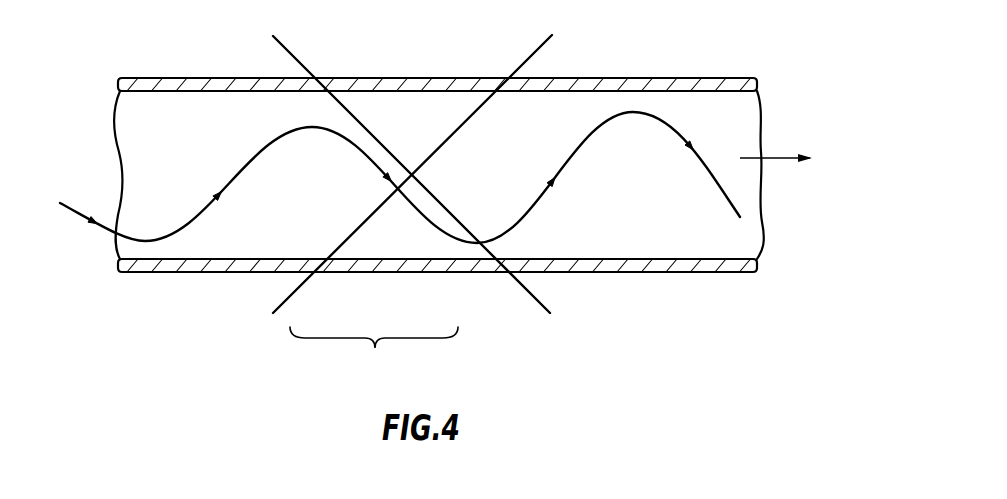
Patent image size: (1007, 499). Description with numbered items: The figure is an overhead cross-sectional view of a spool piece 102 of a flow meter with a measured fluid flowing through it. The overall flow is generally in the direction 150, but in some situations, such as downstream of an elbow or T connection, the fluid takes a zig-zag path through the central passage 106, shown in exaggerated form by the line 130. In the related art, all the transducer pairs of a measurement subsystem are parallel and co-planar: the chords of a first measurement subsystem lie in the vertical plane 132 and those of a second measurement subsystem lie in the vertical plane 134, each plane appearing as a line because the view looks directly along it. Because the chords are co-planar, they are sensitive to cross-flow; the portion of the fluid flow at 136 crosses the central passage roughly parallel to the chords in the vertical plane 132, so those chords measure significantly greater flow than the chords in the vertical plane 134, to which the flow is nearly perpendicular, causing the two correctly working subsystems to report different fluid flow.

The spool piece 102 is at (722, 78).
The central passage 106 is at (655, 221).
The line 130 is at (240, 171).
The vertical plane 132 is at (297, 58).
The vertical plane 134 is at (553, 52).
The portion of the fluid flow 136 is at (372, 350).
The direction 150 is at (780, 158).